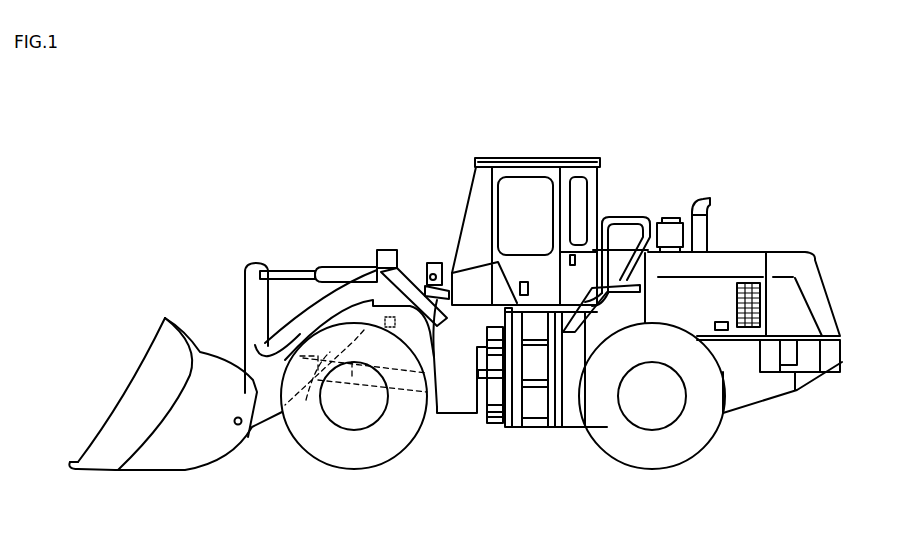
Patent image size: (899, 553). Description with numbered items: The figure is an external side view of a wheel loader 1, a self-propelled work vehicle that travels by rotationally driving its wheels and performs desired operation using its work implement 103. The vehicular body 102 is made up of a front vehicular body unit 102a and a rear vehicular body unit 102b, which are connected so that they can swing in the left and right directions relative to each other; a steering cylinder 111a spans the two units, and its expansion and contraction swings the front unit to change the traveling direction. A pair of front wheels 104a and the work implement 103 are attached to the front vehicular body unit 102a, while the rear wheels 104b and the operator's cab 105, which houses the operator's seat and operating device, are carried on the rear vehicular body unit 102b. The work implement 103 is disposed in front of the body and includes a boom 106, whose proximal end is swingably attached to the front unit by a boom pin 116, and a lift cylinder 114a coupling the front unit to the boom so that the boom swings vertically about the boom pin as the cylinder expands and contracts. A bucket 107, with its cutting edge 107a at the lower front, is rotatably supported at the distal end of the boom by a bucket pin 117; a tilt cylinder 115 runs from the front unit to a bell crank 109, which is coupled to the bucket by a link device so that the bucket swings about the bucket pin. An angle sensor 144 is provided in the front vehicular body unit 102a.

The wheel loader 1 is at (690, 128).
The vehicular body 102 is at (521, 440).
The front vehicular body unit 102a is at (450, 405).
The rear vehicular body unit 102b is at (565, 405).
The work implement 103 is at (110, 400).
The front wheels 104a is at (368, 450).
The rear wheels 104b is at (630, 448).
The operator's cab 105 is at (574, 158).
The boom 106 is at (300, 335).
The bucket 107 is at (184, 324).
The cutting edge of bucket 107a is at (66, 464).
The bell crank 109 is at (247, 306).
The steering cylinder 111a is at (492, 428).
The lift cylinder 114a is at (306, 400).
The tilt cylinder 115 is at (336, 266).
The boom pin 116 is at (440, 275).
The bucket pin 117 is at (234, 428).
The angle sensor 144 is at (364, 330).